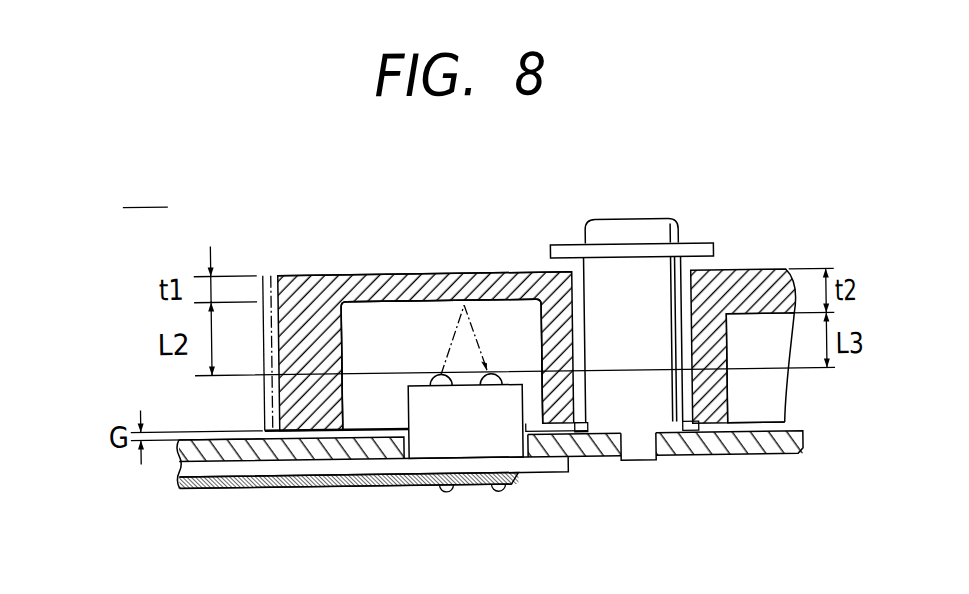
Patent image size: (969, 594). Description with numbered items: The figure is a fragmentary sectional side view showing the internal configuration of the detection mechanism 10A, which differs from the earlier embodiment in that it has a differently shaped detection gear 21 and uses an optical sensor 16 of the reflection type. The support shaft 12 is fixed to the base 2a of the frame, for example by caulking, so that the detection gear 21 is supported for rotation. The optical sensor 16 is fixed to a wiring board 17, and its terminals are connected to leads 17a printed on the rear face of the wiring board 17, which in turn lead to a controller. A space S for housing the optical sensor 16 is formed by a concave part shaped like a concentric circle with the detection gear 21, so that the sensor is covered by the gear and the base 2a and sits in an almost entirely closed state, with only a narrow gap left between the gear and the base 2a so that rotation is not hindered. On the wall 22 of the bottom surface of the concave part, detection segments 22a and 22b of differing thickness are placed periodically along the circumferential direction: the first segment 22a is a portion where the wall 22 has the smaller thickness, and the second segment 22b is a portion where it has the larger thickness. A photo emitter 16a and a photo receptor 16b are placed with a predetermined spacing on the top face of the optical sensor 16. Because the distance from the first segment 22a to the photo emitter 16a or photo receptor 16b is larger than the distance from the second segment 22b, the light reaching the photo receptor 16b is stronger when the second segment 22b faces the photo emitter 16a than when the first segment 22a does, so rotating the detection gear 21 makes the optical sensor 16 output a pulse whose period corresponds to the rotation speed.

The detection mechanism 10A is at (144, 191).
The support shaft 12 is at (656, 222).
The optical sensor 16 is at (473, 449).
The photo emitter 16a is at (436, 377).
The photo receptor 16b is at (491, 378).
The wiring board 17 is at (197, 485).
The leads 17a is at (233, 486).
The base 2a is at (278, 458).
The detection gear 21 is at (438, 266).
The wall 22 is at (380, 273).
The first segment 22a is at (381, 312).
The second segment 22b is at (758, 330).
The space S is at (520, 316).